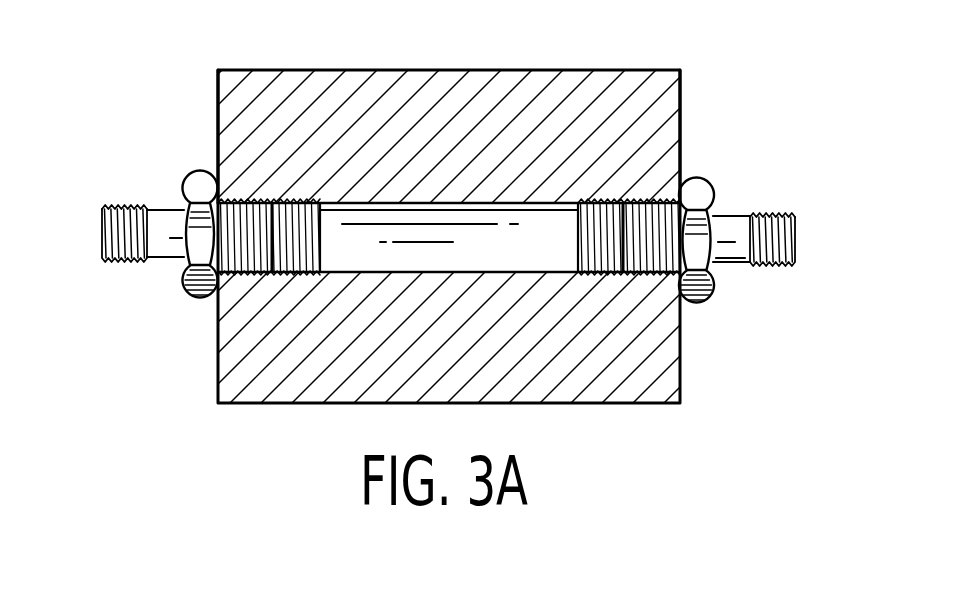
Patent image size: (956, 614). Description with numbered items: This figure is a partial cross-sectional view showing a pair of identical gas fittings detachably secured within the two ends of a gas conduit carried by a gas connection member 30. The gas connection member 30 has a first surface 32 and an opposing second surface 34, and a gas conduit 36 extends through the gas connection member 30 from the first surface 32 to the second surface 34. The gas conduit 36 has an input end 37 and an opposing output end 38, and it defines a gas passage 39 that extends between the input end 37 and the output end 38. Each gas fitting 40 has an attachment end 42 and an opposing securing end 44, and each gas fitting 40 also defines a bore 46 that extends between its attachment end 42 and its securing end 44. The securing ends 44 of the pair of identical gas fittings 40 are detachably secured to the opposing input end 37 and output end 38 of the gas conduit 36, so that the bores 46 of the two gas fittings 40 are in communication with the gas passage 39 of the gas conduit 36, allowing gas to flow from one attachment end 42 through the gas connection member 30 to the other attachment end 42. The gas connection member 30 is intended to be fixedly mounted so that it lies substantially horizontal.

The gas connection member 30 is at (302, 69).
The first surface 32 is at (217, 103).
The second surface 34 is at (681, 103).
The gas conduit 36 is at (523, 274).
The input end 37 is at (681, 302).
The output end 38 is at (216, 297).
The gas passage 39 is at (403, 250).
The gas fitting 40 is at (118, 259).
The attachment end 42 is at (112, 207).
The securing end 44 is at (257, 274).
The bore 46 is at (101, 245).